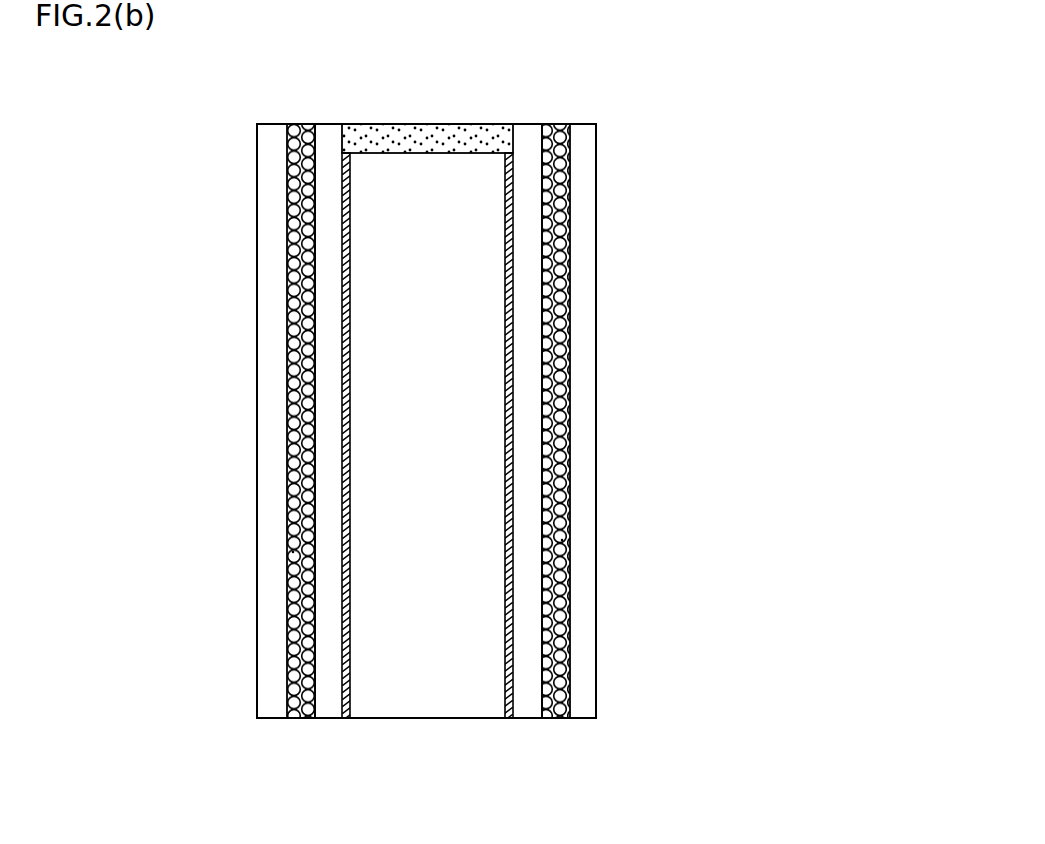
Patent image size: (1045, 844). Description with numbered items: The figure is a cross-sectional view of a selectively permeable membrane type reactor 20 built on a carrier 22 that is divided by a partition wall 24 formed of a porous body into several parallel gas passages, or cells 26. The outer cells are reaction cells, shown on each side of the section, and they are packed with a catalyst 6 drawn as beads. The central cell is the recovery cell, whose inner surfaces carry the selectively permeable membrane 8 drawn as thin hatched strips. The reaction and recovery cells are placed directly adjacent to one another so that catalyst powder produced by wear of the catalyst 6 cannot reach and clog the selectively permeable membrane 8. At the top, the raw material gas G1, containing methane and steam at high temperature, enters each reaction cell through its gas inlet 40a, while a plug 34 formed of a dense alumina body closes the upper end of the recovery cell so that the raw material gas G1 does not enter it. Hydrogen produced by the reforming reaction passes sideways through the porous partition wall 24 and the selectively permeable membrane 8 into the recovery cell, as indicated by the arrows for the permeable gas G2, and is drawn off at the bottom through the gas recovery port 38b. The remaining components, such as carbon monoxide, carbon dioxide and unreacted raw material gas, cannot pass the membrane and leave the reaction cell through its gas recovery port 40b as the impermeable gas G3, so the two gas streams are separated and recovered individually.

The selectively permeable membrane type reactor 20 is at (648, 278).
The carrier 22 is at (590, 437).
The partition wall 24 is at (330, 125).
The cells 26 is at (283, 270).
The plug 34 is at (448, 125).
The gas recovery port 38b is at (377, 718).
The gas inlet 40a is at (288, 124).
The gas recovery port 40b is at (288, 718).
The catalyst 6 is at (293, 552).
The selectively permeable membrane 8 is at (505, 678).
The raw material gas G1 is at (298, 124).
The permeable gas G2 is at (307, 288).
The impermeable gas G3 is at (302, 718).